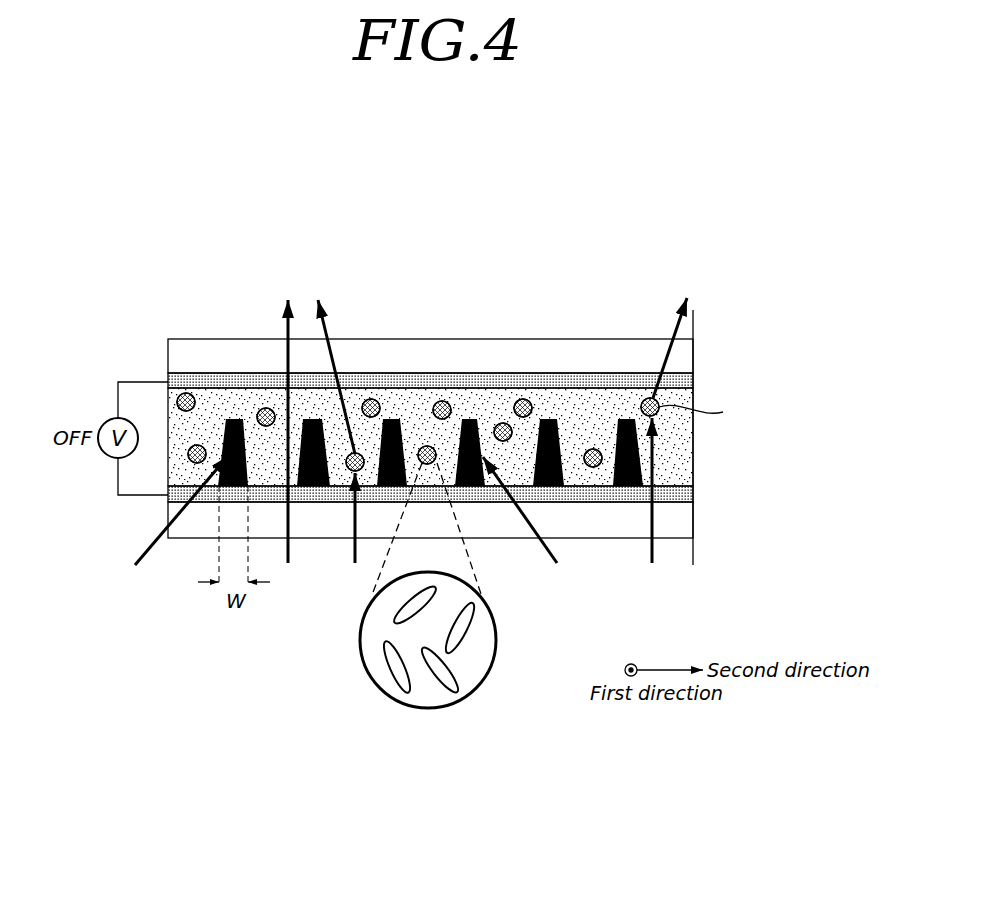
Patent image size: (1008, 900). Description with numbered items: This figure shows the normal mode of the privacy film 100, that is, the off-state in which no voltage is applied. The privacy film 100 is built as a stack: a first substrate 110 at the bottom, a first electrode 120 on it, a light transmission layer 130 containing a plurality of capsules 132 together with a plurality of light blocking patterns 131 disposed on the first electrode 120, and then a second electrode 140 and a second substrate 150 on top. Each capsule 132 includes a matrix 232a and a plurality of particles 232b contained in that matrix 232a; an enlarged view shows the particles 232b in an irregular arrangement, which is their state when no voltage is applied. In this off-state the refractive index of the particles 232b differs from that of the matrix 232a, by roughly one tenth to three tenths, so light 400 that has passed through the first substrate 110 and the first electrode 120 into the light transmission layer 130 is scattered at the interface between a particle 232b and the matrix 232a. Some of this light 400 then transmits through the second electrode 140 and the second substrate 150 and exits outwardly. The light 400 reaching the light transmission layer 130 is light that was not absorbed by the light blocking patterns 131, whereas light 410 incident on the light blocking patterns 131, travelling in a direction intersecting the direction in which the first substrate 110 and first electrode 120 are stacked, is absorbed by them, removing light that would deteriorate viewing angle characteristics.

The privacy film 100 is at (635, 310).
The first substrate 110 is at (683, 522).
The first electrode 120 is at (683, 497).
The light transmission layer 130 is at (683, 437).
The light blocking patterns 131 is at (639, 460).
The capsules 132 is at (418, 602).
The second electrode 140 is at (683, 383).
The second substrate 150 is at (683, 357).
The matrix 232a is at (377, 670).
The particles 232b is at (438, 670).
The light 400 is at (288, 555).
The light 410 is at (150, 556).